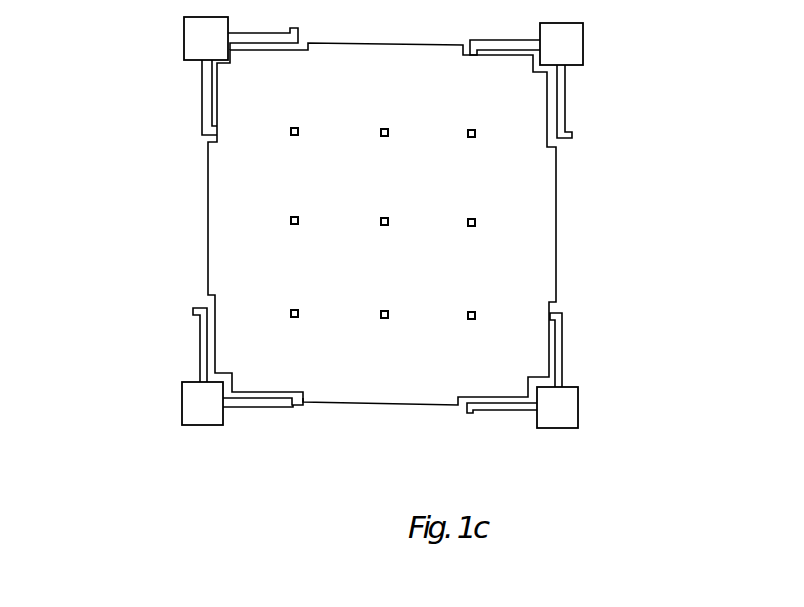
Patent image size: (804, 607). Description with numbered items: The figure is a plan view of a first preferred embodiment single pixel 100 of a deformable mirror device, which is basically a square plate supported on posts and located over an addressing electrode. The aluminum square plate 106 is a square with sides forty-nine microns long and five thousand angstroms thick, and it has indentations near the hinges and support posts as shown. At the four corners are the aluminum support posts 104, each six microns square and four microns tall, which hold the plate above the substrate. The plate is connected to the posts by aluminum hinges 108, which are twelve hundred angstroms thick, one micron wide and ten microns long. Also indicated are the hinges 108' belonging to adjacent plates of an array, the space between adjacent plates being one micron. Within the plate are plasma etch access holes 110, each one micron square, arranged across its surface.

The pixel 100 is at (134, 179).
The aluminum support posts 104 is at (583, 46).
The aluminum square plate 106 is at (400, 275).
The aluminum hinges 108 is at (375, 235).
The hinges for adjacent plates 108' is at (386, 230).
The plasma etch access holes 110 is at (471, 123).